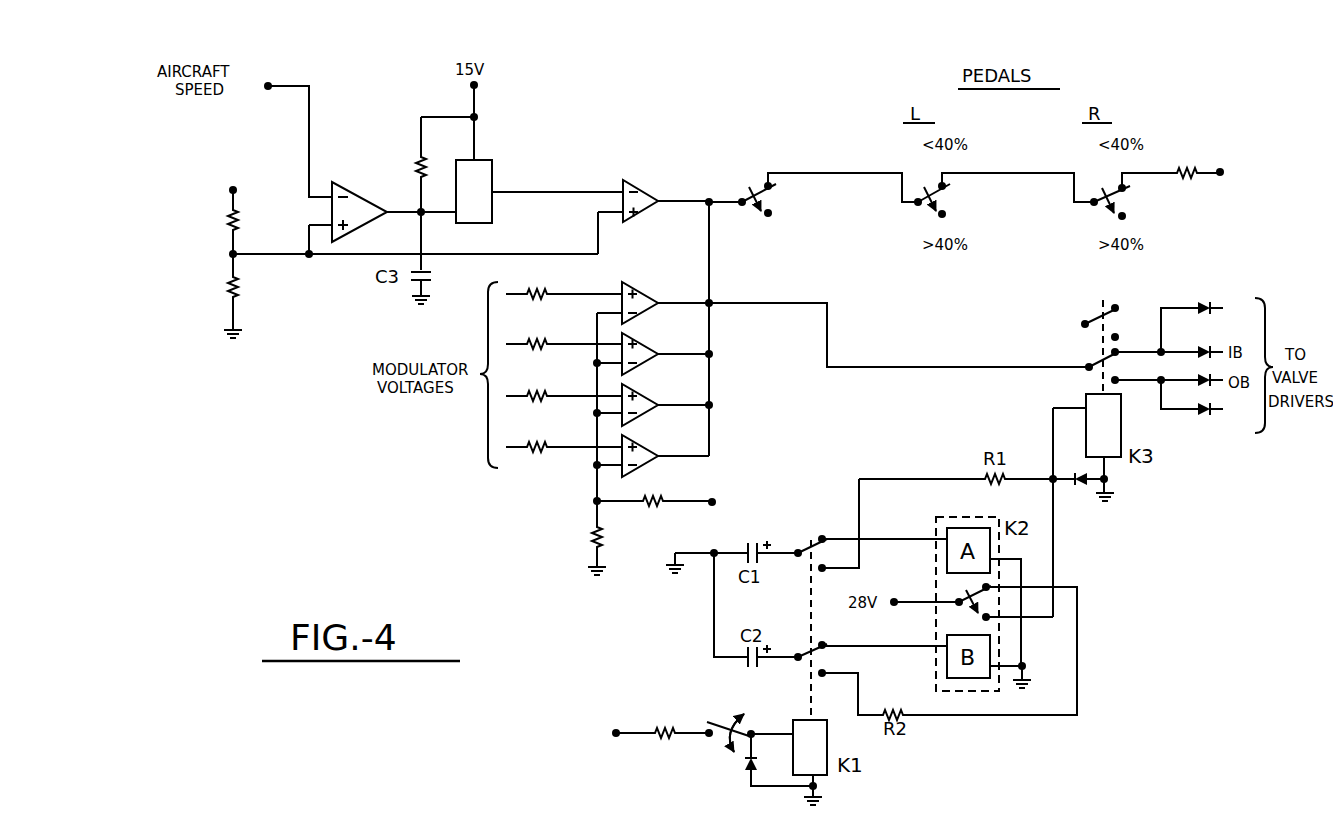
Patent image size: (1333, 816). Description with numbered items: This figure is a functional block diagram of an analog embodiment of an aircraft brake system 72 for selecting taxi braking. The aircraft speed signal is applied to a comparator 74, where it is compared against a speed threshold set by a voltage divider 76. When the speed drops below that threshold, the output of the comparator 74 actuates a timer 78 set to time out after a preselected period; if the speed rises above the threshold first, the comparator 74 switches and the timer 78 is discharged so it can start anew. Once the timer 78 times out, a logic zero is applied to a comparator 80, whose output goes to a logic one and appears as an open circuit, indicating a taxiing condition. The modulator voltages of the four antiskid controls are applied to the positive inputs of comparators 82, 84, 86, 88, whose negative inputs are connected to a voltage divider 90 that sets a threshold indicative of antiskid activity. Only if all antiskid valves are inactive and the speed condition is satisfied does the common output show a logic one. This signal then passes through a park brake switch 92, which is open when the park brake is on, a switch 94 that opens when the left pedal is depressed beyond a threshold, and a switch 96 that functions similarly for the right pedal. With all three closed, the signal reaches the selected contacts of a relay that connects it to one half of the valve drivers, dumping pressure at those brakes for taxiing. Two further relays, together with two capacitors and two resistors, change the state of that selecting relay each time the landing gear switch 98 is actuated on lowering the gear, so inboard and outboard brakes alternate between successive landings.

The brake system 72 is at (653, 114).
The comparator 74 is at (371, 195).
The voltage divider 76 is at (218, 290).
The timer 78 is at (496, 162).
The comparator 80 is at (635, 214).
The comparator 82 is at (652, 288).
The comparator 84 is at (654, 343).
The comparator 86 is at (654, 390).
The comparator 88 is at (654, 442).
The voltage divider 90 is at (581, 510).
The switch 92 is at (778, 204).
The switch 94 is at (954, 204).
The switch 96 is at (1131, 205).
The landing gear switch 98 is at (722, 716).